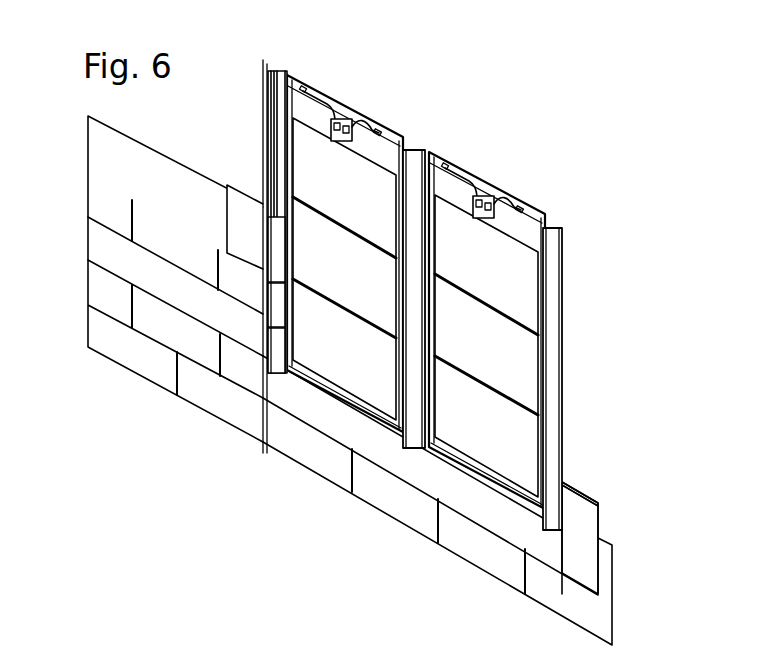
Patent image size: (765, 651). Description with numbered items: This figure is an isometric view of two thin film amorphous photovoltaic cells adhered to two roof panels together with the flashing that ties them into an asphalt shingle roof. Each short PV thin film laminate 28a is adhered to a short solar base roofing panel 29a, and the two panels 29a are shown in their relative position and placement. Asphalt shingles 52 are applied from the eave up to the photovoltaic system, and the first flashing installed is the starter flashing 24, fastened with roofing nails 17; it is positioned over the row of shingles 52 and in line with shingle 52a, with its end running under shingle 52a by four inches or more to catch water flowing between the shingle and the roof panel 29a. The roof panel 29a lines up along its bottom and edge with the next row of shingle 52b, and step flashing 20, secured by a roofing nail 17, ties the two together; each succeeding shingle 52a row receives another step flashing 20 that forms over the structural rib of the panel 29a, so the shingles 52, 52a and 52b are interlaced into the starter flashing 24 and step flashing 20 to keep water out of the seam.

The roofing nail 17 is at (242, 208).
The step flashing 20 is at (275, 253).
The starter flashing 24 is at (575, 538).
The short PV thin film laminate 28a is at (328, 180).
The short solar base roofing panel 29a is at (288, 80).
The asphalt shingle 52 is at (319, 380).
The asphalt shingle 52a is at (115, 185).
The asphalt shingle 52b is at (115, 252).